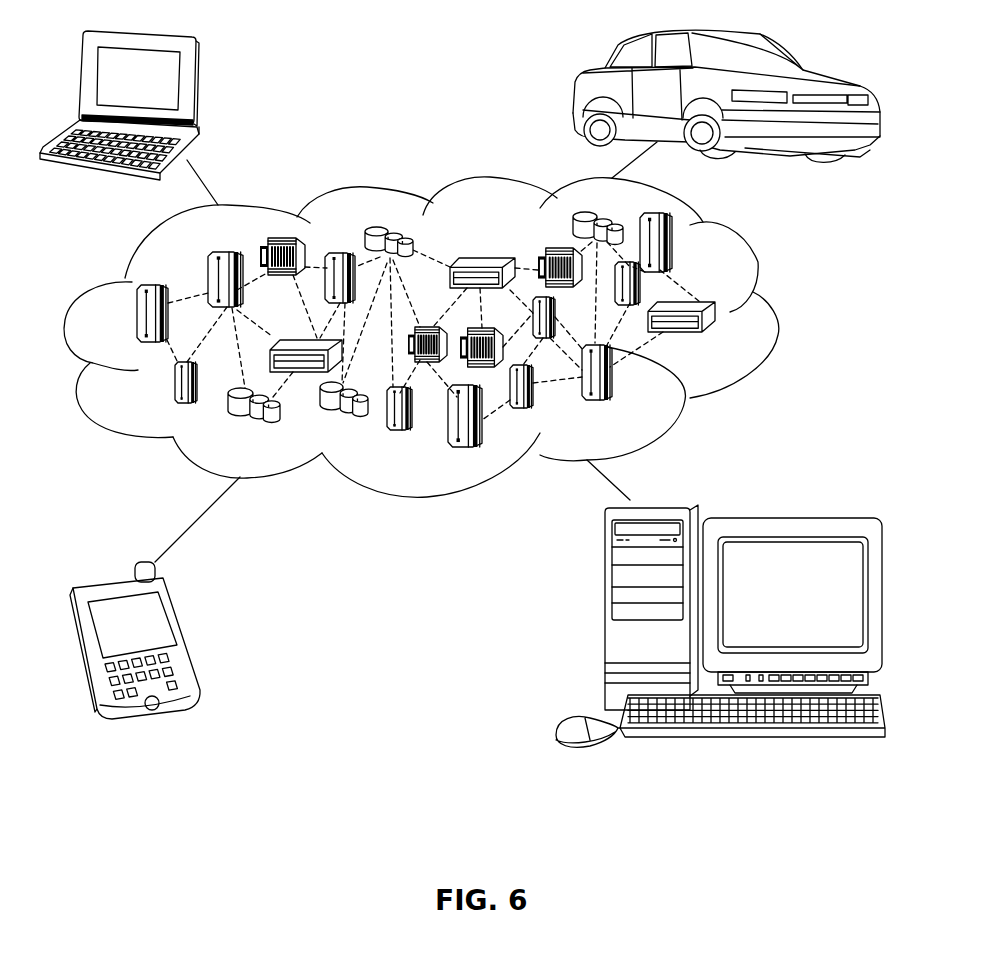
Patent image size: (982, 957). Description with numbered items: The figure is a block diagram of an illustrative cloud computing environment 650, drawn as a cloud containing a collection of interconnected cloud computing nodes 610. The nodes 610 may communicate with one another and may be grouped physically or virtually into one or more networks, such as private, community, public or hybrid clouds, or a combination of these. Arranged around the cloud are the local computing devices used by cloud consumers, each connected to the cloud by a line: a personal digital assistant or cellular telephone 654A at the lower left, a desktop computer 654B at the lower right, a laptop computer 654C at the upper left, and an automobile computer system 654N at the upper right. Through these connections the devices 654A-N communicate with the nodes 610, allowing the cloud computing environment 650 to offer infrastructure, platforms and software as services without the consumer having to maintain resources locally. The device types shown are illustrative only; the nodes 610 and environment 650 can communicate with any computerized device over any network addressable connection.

The cloud computing nodes 610 is at (740, 338).
The cloud computing environment 650 is at (758, 275).
The personal digital assistant (PDA) or cellular telephone 654A is at (187, 638).
The desktop computer 654B is at (607, 615).
The laptop computer 654C is at (197, 82).
The automobile computer system 654N is at (582, 87).